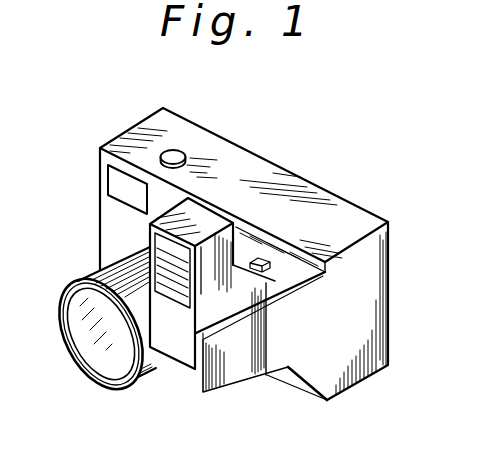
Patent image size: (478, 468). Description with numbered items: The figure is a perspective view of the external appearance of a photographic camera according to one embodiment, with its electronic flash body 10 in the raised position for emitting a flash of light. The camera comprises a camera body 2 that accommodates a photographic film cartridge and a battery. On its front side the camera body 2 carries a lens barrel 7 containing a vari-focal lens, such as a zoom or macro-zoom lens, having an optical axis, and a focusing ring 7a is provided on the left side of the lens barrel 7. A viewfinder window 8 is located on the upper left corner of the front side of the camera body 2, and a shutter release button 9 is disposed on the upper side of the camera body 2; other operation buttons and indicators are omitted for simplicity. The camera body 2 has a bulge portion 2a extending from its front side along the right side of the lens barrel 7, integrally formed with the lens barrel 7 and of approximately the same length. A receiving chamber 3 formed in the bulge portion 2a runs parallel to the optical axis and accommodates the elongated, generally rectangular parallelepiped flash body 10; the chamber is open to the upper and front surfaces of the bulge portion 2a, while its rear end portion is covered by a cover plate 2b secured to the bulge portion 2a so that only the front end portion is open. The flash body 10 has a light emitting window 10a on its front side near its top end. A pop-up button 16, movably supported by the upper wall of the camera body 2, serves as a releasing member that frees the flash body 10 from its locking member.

The camera body 2 is at (299, 167).
The bulge portion 2a is at (228, 362).
The cover plate 2b is at (243, 280).
The receiving chamber 3 is at (217, 328).
The lens barrel 7 is at (80, 351).
The focusing ring 7a is at (128, 252).
The viewfinder window 8 is at (109, 176).
The shutter release button 9 is at (184, 156).
The electronic flash body 10 is at (181, 337).
The light emitting window 10a is at (167, 272).
The pop-up button 16 is at (270, 258).